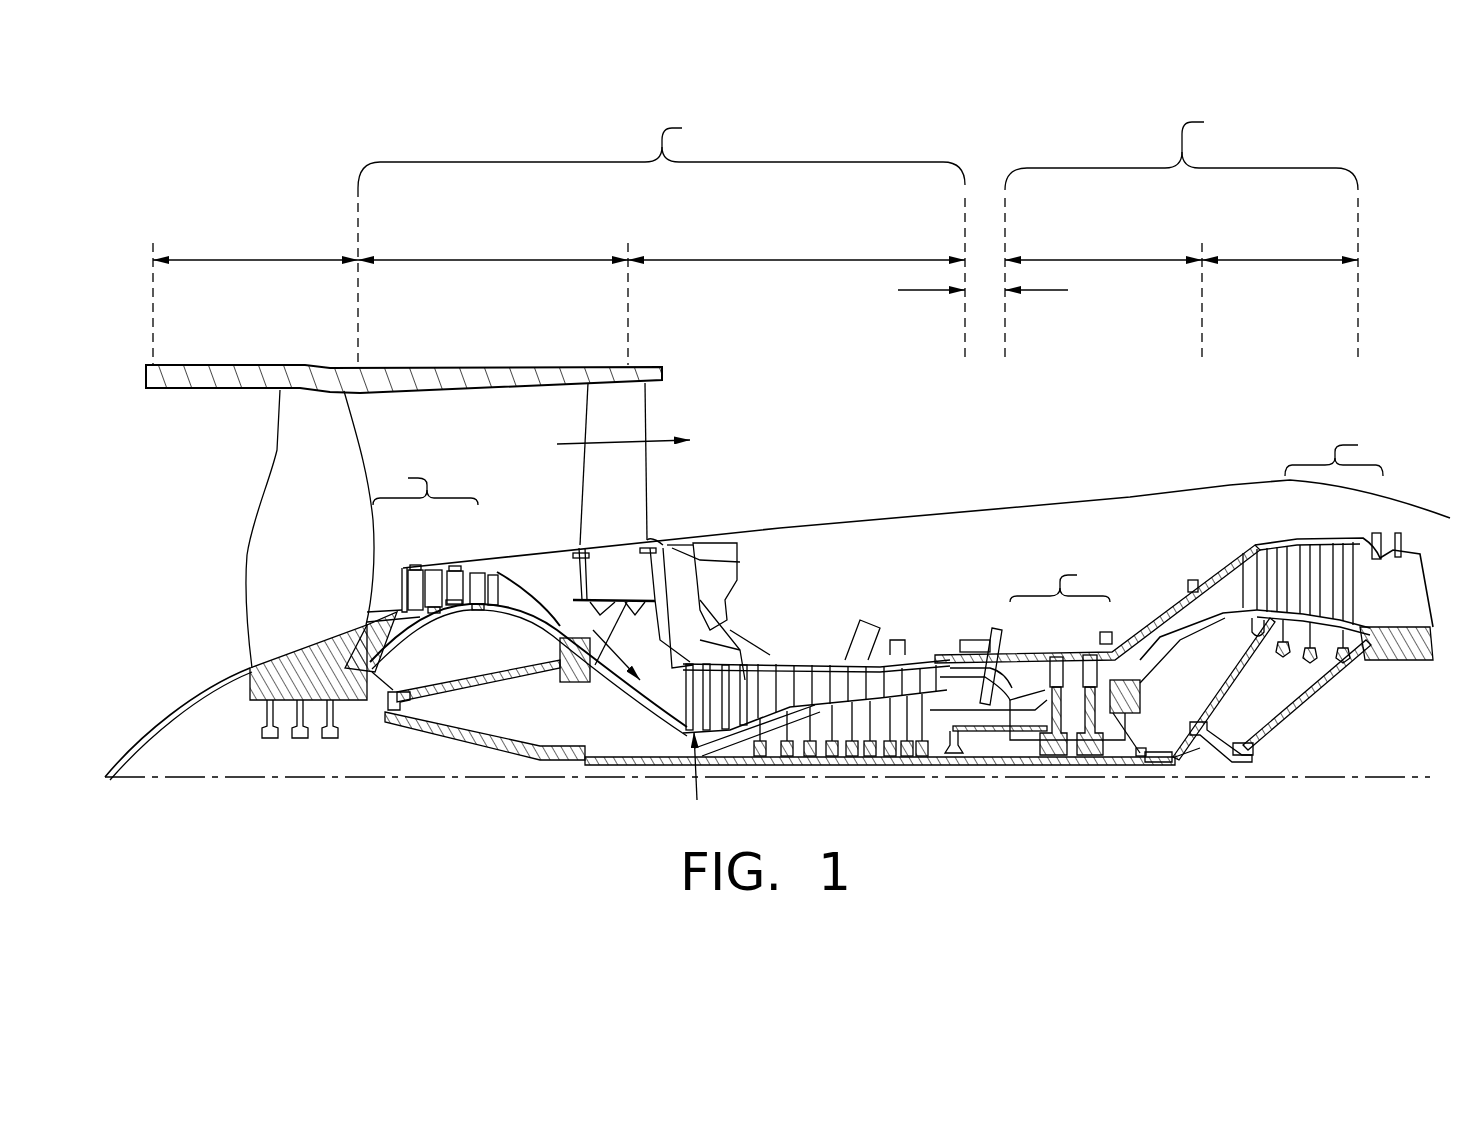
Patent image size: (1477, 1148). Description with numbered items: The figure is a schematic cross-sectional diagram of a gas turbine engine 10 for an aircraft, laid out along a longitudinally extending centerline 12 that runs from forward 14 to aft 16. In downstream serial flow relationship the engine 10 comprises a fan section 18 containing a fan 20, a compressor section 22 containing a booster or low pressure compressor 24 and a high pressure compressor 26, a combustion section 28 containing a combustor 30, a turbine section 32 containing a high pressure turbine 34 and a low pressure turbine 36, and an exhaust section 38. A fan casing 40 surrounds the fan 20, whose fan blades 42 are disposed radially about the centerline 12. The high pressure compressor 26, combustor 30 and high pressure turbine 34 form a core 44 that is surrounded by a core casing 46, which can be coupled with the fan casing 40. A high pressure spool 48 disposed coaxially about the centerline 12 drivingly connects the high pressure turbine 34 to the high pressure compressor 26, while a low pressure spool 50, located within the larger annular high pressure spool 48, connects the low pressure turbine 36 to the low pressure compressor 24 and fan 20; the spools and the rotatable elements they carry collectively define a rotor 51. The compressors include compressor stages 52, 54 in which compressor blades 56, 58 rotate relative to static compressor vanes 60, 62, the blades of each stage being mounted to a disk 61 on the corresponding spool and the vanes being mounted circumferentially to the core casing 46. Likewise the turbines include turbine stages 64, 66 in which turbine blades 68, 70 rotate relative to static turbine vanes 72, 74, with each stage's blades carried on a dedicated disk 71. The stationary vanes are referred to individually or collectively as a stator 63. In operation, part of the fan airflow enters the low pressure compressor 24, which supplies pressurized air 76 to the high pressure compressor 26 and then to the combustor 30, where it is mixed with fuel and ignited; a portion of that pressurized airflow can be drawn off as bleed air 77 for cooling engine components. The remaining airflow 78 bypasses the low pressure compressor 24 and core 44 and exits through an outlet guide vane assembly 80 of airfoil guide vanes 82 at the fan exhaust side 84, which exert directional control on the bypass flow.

The gas turbine engine 10 is at (1372, 290).
The centerline 12 is at (233, 778).
The forward 14 is at (186, 505).
The aft 16 is at (1463, 598).
The fan section 18 is at (255, 258).
The fan 20 is at (230, 626).
The compressor section 22 is at (661, 147).
The low pressure compressor 24 is at (496, 258).
The high pressure compressor 26 is at (797, 258).
The combustion section 28 is at (912, 292).
The combustor 30 is at (992, 640).
The turbine section 32 is at (1181, 148).
The high pressure turbine 34 is at (1103, 258).
The low pressure turbine 36 is at (1278, 258).
The exhaust section 38 is at (1422, 576).
The fan casing 40 is at (395, 365).
The fan blades 42 is at (330, 436).
The core 44 is at (925, 548).
The core casing 46 is at (1190, 580).
The high pressure spool 48 is at (975, 740).
The low pressure spool 50 is at (562, 762).
The rotor 51 is at (823, 765).
The compressor stages 52 is at (528, 595).
The compressor stages 54 is at (796, 655).
The compressor blades 56 is at (436, 570).
The compressor blades 58 is at (712, 660).
The static compressor vanes 60 is at (416, 570).
The disk 61 is at (452, 605).
The static compressor vanes 62 is at (700, 640).
The stator 63 is at (697, 800).
The turbine stages 64 is at (1060, 576).
The turbine stages 66 is at (1340, 449).
The turbine blades 68 is at (1086, 656).
The turbine blades 70 is at (1343, 546).
The disk 71 is at (1257, 630).
The static turbine vanes 72 is at (1052, 657).
The static turbine vanes 74 is at (1328, 546).
The pressurized air 76 is at (596, 690).
The bleed air 77 is at (815, 665).
The airflow 78 is at (568, 445).
The outlet guide vane assembly 80 is at (660, 502).
The airfoil guide vanes 82 is at (592, 478).
The fan exhaust side 84 is at (665, 418).